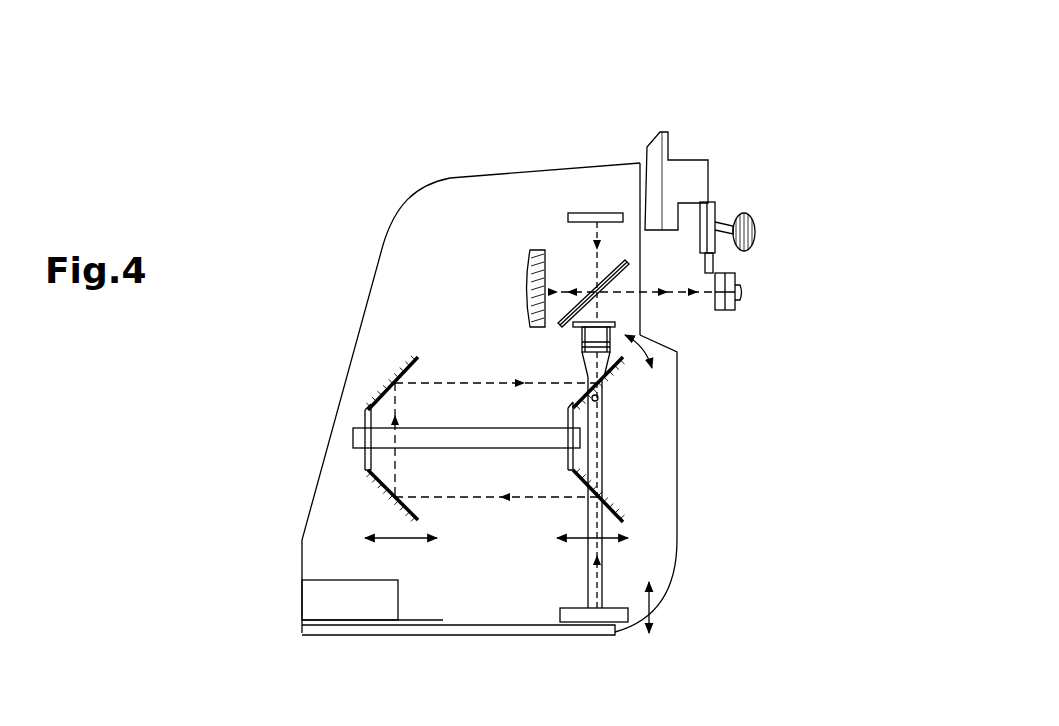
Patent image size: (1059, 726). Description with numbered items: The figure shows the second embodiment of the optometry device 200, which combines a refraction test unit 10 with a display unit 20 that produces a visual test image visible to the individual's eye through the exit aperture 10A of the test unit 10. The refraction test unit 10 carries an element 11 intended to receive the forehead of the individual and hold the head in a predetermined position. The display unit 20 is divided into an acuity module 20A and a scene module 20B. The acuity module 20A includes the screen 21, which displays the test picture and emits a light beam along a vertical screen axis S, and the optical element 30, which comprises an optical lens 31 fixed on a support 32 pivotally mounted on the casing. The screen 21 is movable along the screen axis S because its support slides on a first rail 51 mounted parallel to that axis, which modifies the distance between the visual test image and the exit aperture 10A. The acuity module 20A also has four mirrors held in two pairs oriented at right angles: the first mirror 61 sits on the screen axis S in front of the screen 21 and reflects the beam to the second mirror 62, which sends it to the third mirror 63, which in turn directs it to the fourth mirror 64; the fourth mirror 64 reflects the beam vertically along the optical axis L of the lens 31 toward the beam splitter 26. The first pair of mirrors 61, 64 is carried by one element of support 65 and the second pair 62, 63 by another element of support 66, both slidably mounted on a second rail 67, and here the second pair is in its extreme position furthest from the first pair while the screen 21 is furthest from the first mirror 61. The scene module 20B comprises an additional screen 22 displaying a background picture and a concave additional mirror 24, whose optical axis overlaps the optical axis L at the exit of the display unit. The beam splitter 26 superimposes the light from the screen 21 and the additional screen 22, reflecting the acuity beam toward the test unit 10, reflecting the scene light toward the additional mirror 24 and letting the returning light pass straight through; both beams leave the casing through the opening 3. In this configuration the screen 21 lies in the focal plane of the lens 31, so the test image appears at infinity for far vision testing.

The display unit 20 is at (383, 183).
The acuity module 20A is at (693, 413).
The scene module 20B is at (555, 150).
The optometry device 200 is at (680, 106).
The opening 3 is at (642, 282).
The refraction test unit 10 is at (741, 320).
The exit aperture 10A is at (737, 289).
The element receiving the forehead 11 is at (742, 212).
The additional screen 22 is at (582, 212).
The additional mirror 24 is at (522, 258).
The beam splitter 26 is at (610, 276).
The optical element 30 is at (624, 325).
The optical lens 31 is at (622, 340).
The support 32 is at (601, 399).
The first rail 51 is at (597, 462).
The first mirror 61 is at (620, 505).
The second mirror 62 is at (367, 473).
The third mirror 63 is at (418, 356).
The fourth mirror 64 is at (583, 396).
The element of support 65 is at (567, 457).
The element of support 66 is at (353, 437).
The second rail 67 is at (433, 437).
The screen 21 is at (560, 615).
The optical axis L is at (597, 315).
The screen axis S is at (598, 553).